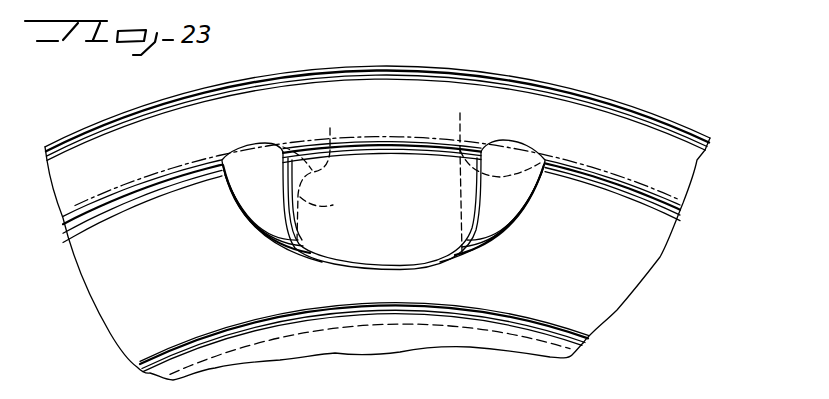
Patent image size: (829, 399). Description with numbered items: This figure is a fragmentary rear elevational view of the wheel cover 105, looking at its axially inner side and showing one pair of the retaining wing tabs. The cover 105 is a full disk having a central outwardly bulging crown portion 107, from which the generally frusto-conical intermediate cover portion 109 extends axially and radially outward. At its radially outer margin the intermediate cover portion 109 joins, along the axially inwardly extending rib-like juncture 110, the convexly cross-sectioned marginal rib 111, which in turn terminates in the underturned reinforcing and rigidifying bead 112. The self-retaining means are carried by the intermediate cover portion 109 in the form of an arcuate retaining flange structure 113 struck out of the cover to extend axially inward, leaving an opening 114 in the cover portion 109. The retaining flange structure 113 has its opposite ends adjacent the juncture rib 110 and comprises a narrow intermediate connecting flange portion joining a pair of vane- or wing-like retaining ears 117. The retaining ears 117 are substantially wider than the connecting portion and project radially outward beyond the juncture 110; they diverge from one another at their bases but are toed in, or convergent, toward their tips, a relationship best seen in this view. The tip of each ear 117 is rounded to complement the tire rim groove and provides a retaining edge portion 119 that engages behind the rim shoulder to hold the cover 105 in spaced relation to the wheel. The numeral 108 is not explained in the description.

The cover 105 is at (684, 232).
The central crown portion 107 is at (553, 341).
The lower edge portion 108 is at (584, 343).
The intermediate cover portion 109 is at (603, 270).
The juncture rib 110 is at (667, 196).
The marginal rib 111 is at (613, 127).
The bead 112 is at (547, 93).
The retaining flange structure 113 is at (320, 267).
The opening 114 is at (420, 233).
The retaining ear 117 is at (277, 190).
The retaining edge portion 119 is at (281, 150).